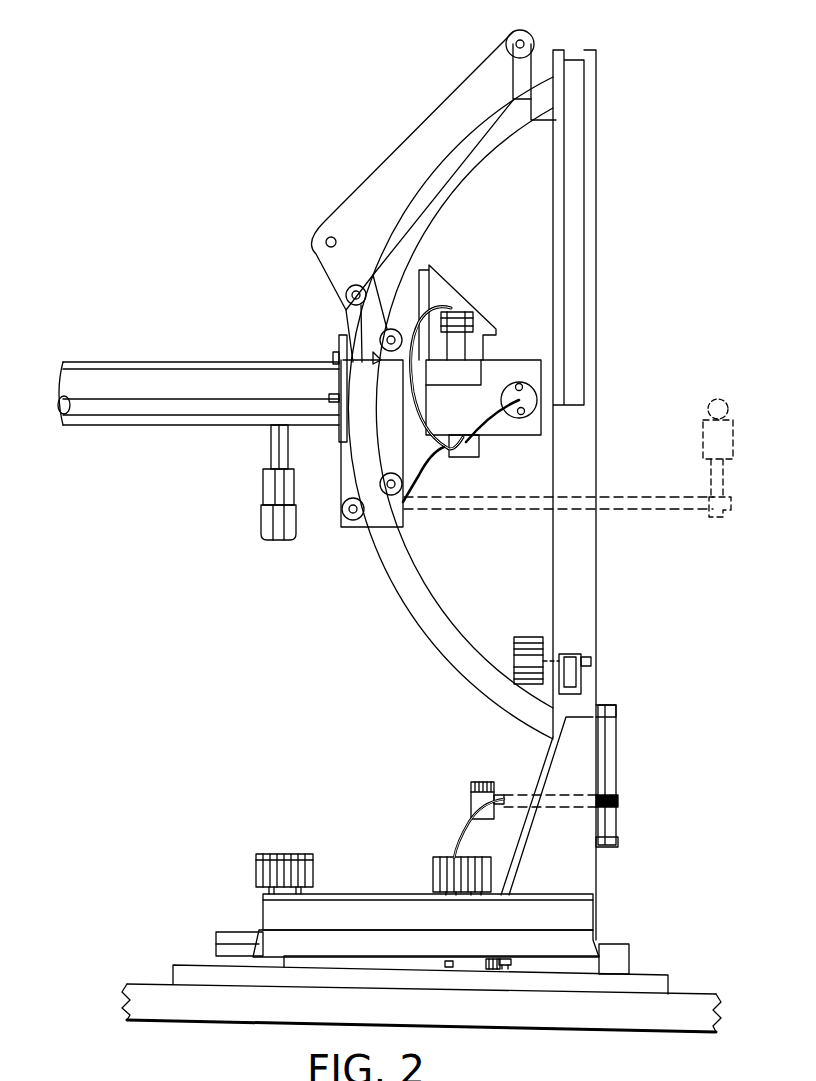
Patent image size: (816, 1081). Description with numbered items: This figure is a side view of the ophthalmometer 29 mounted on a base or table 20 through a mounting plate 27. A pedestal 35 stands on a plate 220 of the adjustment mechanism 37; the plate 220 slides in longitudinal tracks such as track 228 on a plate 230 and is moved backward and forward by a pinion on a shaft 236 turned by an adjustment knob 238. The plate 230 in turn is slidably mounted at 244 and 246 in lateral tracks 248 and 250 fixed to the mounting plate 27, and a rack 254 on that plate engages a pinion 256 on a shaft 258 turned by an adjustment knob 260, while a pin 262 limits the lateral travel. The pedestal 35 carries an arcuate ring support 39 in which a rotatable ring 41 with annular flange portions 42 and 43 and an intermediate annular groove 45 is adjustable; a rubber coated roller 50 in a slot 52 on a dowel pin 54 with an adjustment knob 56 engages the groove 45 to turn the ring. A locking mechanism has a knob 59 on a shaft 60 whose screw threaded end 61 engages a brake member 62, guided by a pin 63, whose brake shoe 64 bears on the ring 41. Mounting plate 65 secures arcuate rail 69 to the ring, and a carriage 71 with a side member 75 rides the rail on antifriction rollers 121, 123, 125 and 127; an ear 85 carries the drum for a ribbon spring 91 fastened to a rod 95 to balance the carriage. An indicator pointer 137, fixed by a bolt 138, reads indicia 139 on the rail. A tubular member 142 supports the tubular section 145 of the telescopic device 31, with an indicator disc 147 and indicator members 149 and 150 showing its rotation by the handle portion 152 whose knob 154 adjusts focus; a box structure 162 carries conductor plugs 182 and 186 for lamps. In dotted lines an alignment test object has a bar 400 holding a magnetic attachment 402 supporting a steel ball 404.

The base or table 20 is at (200, 1021).
The mounting plate 27 is at (670, 979).
The ophthalmometer 29 is at (352, 579).
The telescopic device 31 is at (277, 343).
The pedestal 35 is at (547, 806).
The adjustment mechanism 37 is at (217, 884).
The arcuate ring support 39 is at (595, 608).
The rotatable ring 41 is at (611, 210).
The annular flange portion 42 is at (553, 278).
The annular flange portion 43 is at (590, 356).
The annular groove 45 is at (575, 318).
The rubber coated roller 50 is at (590, 658).
The slot 52 is at (580, 680).
The dowel pin 54 is at (560, 655).
The adjustment knob 56 is at (515, 640).
The knob 59 is at (470, 782).
The shaft 60 is at (498, 793).
The screw threaded end 61 is at (608, 795).
The brake member 62 is at (607, 760).
The pin 63 is at (617, 839).
The brake shoe 64 is at (599, 714).
The mounting plate 65 is at (540, 119).
The arcuate rail 69 is at (468, 174).
The carriage 71 is at (370, 251).
The side member 75 is at (398, 444).
The ear 85 is at (328, 259).
The ribbon spring 91 is at (397, 146).
The rod 95 is at (530, 40).
The antifriction roller 121 is at (402, 481).
The antifriction roller 123 is at (342, 511).
The antifriction roller 125 is at (394, 327).
The antifriction roller 127 is at (345, 293).
The indicator pointer 137 is at (380, 380).
The bolt 138 is at (410, 372).
The indicia 139 is at (405, 221).
The tubular member 142 is at (418, 390).
The tubular section 145 is at (178, 359).
The indicator disc 147 is at (343, 336).
The indicator member 149 is at (336, 356).
The indicator member 150 is at (328, 396).
The handle portion 152 is at (268, 455).
The knob 154 is at (260, 522).
The box structure 162 is at (497, 364).
The conductor plug 182 is at (470, 313).
The conductor plug 186 is at (521, 418).
The plate 220 is at (370, 892).
The track 228 is at (580, 915).
The plate 230 is at (258, 940).
The shaft 236 is at (268, 885).
The adjustment knob 238 is at (256, 856).
The slide mounting 244 is at (215, 935).
The slide mounting 246 is at (598, 950).
The track 248 is at (217, 951).
The track 250 is at (622, 960).
The rack 254 is at (446, 963).
The pinion 256 is at (494, 968).
The shaft 258 is at (485, 957).
The adjustment knob 260 is at (450, 856).
The pin 262 is at (507, 968).
The bar 400 is at (616, 512).
The magnetic attachment 402 is at (702, 448).
The steel ball 404 is at (722, 398).